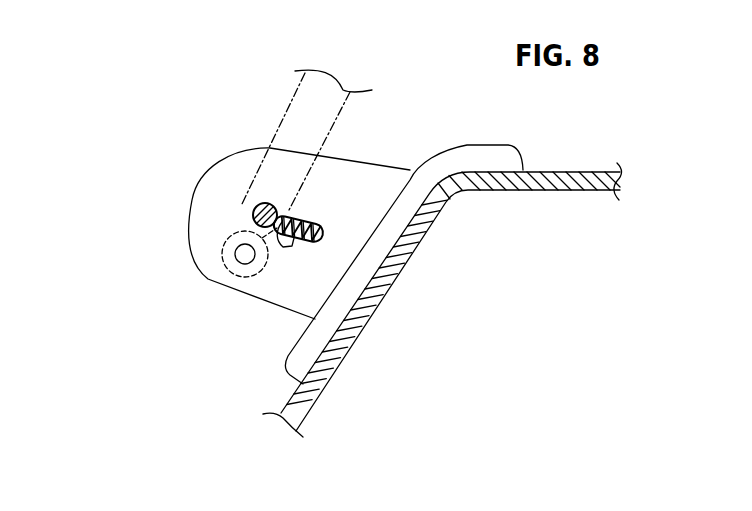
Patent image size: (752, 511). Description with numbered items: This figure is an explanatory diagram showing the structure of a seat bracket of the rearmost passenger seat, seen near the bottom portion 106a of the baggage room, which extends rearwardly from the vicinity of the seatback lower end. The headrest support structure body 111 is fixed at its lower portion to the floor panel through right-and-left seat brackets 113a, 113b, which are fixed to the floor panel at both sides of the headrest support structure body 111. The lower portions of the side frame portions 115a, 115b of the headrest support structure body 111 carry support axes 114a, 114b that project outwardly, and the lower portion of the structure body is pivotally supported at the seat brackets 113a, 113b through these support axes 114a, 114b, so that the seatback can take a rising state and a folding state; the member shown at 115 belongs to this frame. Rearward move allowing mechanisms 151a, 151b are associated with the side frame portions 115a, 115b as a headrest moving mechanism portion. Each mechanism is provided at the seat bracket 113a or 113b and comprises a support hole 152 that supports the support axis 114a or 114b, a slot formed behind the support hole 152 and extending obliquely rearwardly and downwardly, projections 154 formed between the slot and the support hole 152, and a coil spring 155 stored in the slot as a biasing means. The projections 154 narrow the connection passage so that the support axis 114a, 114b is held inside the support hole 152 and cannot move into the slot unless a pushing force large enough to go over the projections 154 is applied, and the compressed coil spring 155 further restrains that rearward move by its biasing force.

The bottom portion of baggage room 106a is at (563, 191).
The headrest support structure body 111 is at (306, 140).
The seat bracket 113a is at (213, 170).
The seat bracket 113b is at (299, 233).
The support axis 114a is at (232, 246).
The support axis 114b is at (245, 254).
The cam member 115 is at (213, 280).
The side frame portion 115a is at (304, 104).
The side frame portion 115b is at (306, 140).
The rearward move allowing mechanism 151a is at (317, 253).
The rearward move allowing mechanism 151b is at (442, 300).
The support hole 152 is at (253, 211).
The projections 154 is at (280, 215).
The coil spring 155 is at (294, 246).